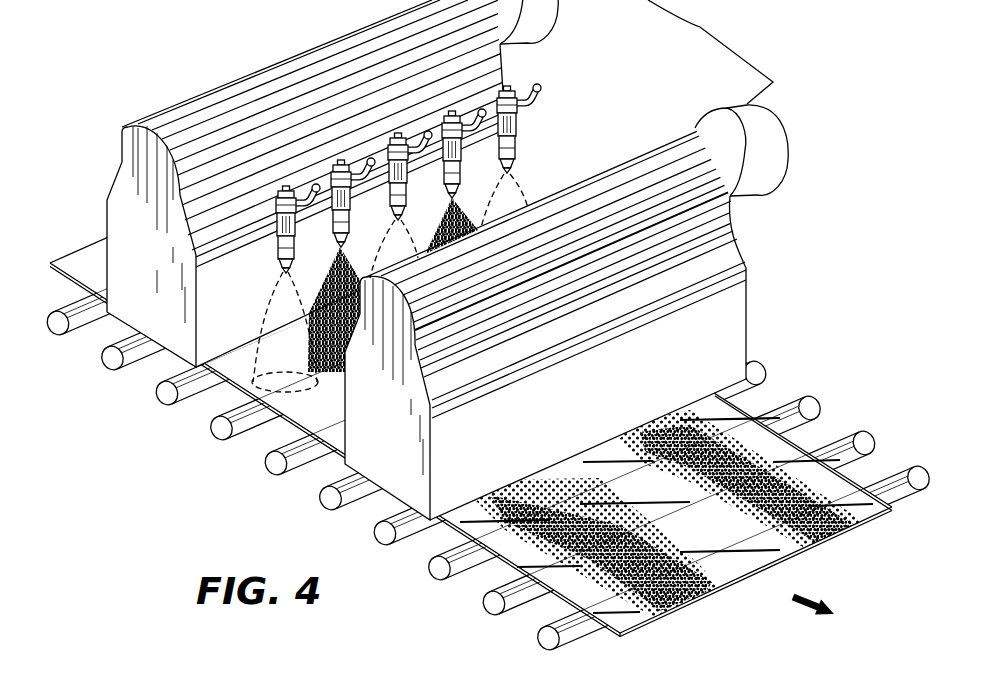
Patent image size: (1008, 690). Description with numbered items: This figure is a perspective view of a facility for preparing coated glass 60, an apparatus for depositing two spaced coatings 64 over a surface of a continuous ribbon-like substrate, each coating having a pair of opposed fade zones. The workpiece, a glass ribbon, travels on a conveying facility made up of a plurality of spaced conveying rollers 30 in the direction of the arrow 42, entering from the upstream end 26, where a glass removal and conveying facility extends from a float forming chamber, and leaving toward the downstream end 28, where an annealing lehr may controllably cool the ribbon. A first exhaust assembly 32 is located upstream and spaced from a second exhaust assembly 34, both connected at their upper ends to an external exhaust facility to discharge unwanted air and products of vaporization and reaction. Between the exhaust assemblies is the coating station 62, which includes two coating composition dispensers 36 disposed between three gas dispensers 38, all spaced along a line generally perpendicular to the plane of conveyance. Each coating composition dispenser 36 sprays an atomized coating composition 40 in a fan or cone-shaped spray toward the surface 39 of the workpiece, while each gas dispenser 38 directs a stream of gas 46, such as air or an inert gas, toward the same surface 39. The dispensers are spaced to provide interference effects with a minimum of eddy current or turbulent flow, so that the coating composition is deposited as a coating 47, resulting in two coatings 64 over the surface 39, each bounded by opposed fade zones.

The upstream end of the coating station 26 is at (307, 183).
The downstream end of the coating station 28 is at (482, 389).
The conveying rollers 30 is at (160, 394).
The first exhaust assembly 32 is at (123, 126).
The second exhaust assembly 34 is at (734, 247).
The coating composition dispenser 36 is at (388, 172).
The gas dispenser 38 is at (294, 252).
The surface of the workpiece 39 is at (87, 252).
The coating composition 40 is at (319, 290).
The direction of travel arrow 42 is at (815, 590).
The gas 46 is at (258, 327).
The coating 47 is at (860, 483).
The facility for preparing coated glass 60 is at (612, 310).
The coating station 62 is at (700, 27).
The coatings 64 is at (482, 389).